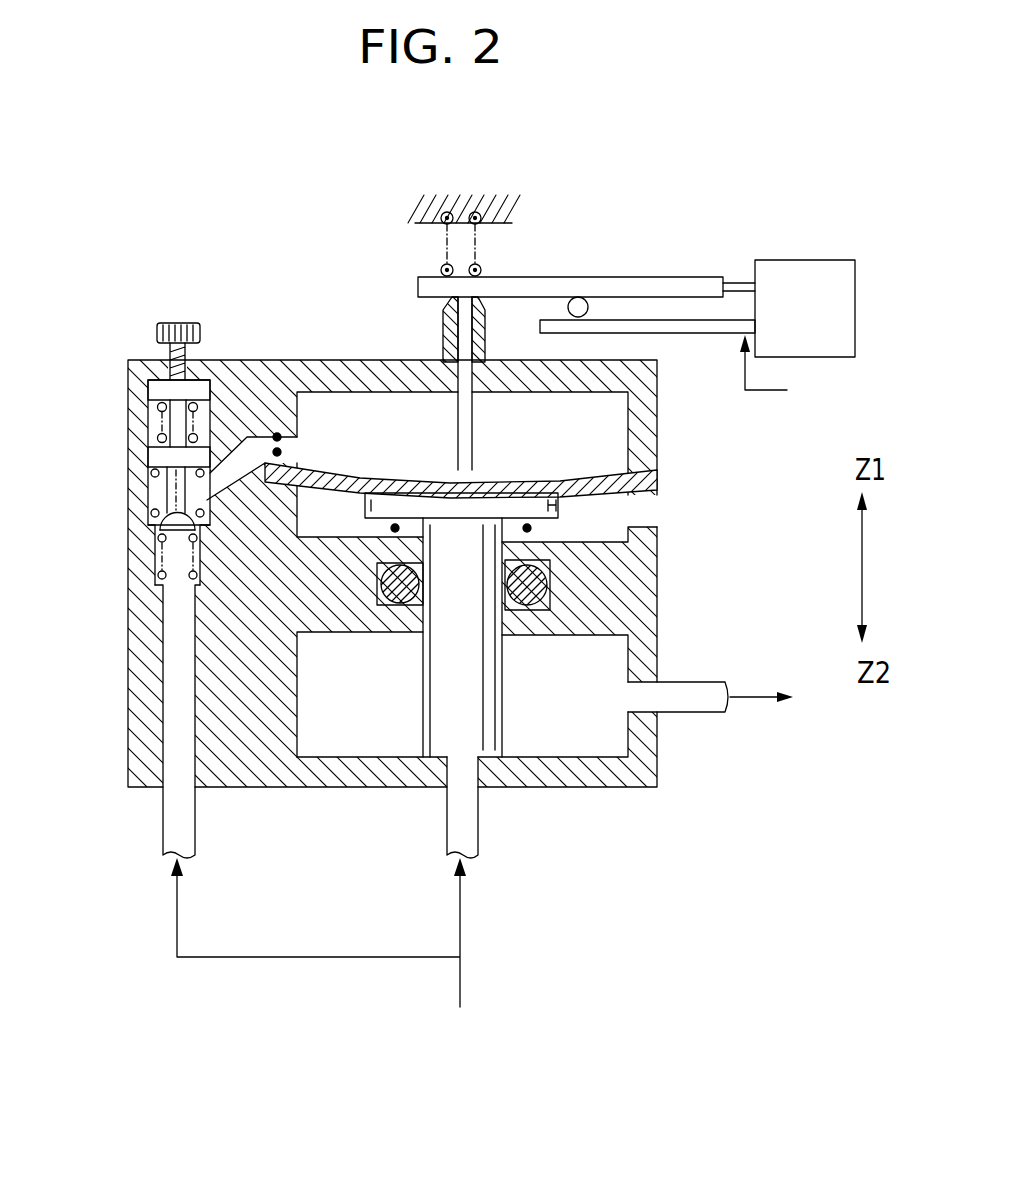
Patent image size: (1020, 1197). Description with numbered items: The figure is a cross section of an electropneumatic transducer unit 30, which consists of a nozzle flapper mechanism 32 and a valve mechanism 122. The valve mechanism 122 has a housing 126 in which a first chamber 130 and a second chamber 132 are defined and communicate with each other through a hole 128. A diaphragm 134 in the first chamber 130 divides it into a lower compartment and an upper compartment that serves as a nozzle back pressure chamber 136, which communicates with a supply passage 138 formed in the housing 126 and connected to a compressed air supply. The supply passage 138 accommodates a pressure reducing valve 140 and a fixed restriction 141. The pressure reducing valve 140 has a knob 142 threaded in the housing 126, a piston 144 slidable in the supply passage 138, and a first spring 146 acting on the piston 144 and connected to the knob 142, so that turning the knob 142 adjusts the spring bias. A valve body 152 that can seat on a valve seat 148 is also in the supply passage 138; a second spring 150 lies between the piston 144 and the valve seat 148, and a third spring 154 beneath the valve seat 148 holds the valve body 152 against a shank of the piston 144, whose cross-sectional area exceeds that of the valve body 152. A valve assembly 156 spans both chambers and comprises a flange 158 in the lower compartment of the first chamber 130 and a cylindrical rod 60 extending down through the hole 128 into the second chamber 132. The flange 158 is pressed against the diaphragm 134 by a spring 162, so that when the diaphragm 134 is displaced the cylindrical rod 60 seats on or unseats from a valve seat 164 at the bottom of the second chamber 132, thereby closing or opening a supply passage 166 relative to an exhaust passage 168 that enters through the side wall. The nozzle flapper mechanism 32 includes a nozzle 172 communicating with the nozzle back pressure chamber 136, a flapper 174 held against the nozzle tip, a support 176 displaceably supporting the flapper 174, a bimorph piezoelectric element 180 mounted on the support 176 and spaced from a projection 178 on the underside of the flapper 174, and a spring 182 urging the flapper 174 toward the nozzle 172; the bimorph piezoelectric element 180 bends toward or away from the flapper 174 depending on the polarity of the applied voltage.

The electropneumatic transducer unit 30 is at (362, 160).
The nozzle flapper mechanism 32 is at (592, 160).
The cylindrical rod 60 is at (468, 705).
The valve mechanism 122 is at (113, 366).
The housing 126 is at (262, 378).
The hole 128 is at (433, 620).
The first chamber 130 is at (603, 503).
The second chamber 132 is at (603, 737).
The diaphragm 134 is at (582, 485).
The nozzle back pressure chamber 136 is at (365, 410).
The supply passage 138 is at (177, 728).
The pressure reducing valve 140 is at (110, 445).
The fixed restriction 141 is at (270, 437).
The knob 142 is at (168, 358).
The piston 144 is at (148, 468).
The first spring 146 is at (157, 407).
The valve seat 148 is at (168, 516).
The second spring 150 is at (164, 520).
The valve body 152 is at (173, 530).
The third spring 154 is at (177, 585).
The valve assembly 156 is at (476, 658).
The flange 158 is at (560, 520).
The spring 162 is at (605, 560).
The valve seat 164 is at (498, 737).
The supply passage 166 is at (463, 827).
The exhaust passage 168 is at (680, 703).
The nozzle 172 is at (484, 330).
The flapper 174 is at (547, 277).
The support 176 is at (798, 273).
The projection 178 is at (580, 297).
The bimorph piezoelectric element 180 is at (710, 333).
The spring 182 is at (440, 232).